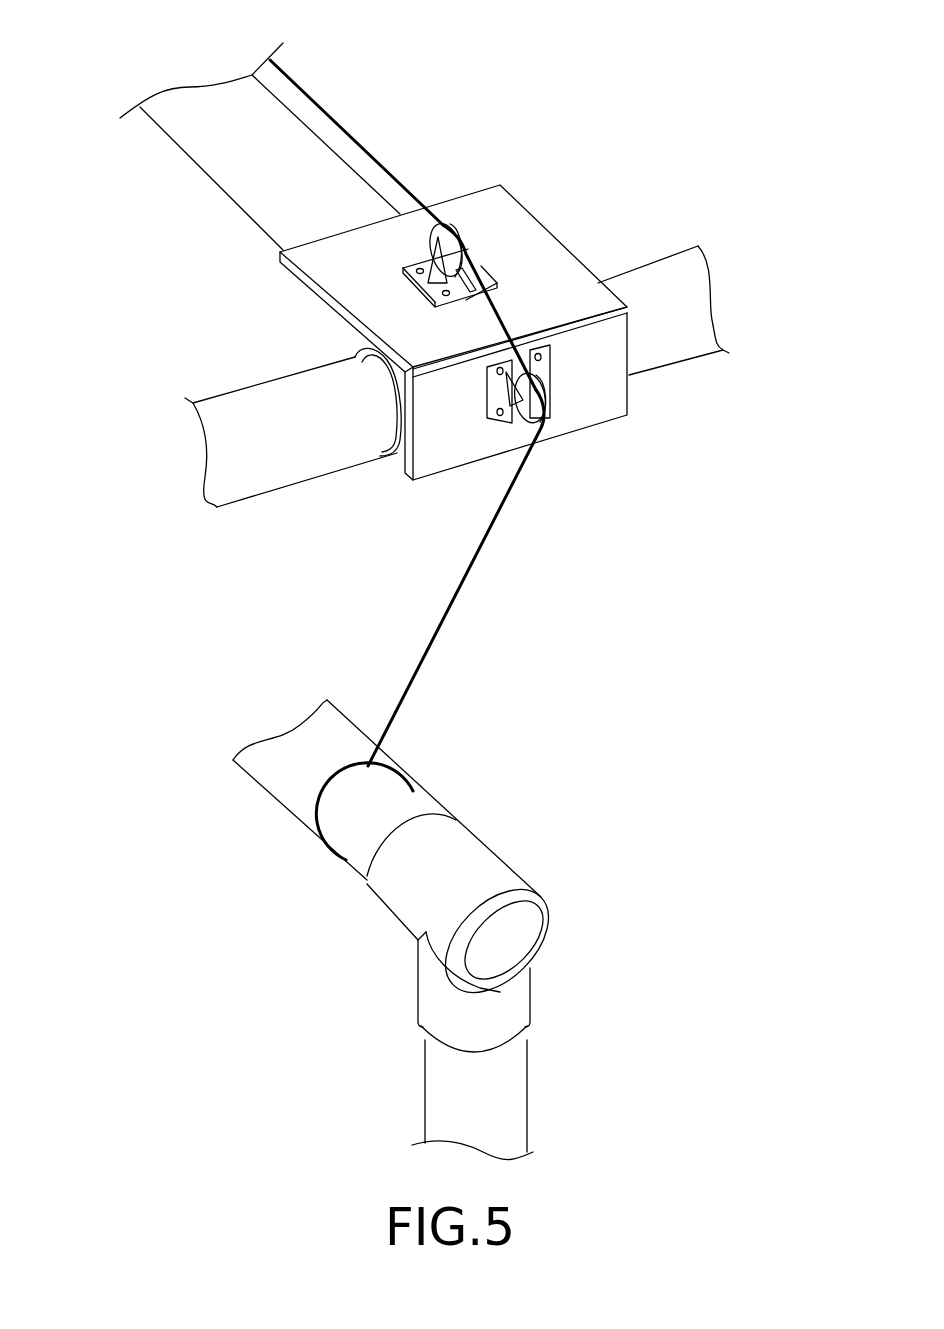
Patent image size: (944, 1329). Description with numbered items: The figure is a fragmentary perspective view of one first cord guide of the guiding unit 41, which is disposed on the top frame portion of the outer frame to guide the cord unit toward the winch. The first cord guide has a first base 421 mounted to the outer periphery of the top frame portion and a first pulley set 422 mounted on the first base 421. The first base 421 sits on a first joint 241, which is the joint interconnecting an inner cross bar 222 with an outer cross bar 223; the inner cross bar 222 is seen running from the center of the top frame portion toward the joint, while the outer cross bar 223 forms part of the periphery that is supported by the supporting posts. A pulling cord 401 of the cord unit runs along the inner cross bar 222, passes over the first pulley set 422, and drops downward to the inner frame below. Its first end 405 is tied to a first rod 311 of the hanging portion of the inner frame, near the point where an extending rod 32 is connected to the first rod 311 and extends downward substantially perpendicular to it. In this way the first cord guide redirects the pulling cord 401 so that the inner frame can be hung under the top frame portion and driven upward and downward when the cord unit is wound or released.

The inner cross bar 222 is at (210, 102).
The guiding unit 41 is at (457, 178).
The first base 421 is at (550, 253).
The first pulley set 422 is at (402, 270).
The outer cross bar 223 is at (692, 342).
The first joint 241 is at (397, 392).
The pulling cord 401 is at (483, 543).
The first end 405 is at (387, 725).
The first rod 311 is at (410, 803).
The extending rod 32 is at (517, 1083).